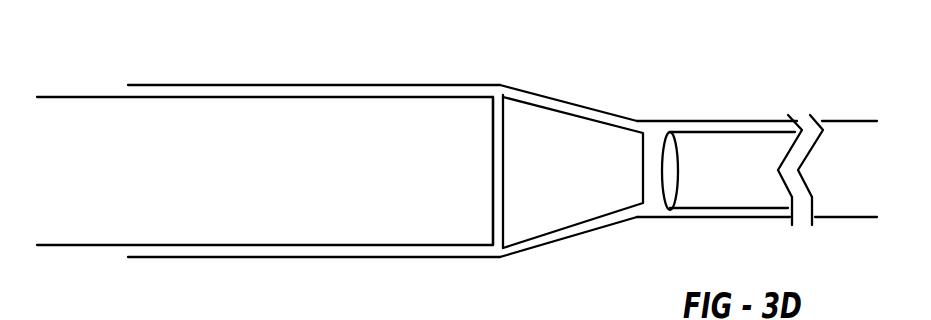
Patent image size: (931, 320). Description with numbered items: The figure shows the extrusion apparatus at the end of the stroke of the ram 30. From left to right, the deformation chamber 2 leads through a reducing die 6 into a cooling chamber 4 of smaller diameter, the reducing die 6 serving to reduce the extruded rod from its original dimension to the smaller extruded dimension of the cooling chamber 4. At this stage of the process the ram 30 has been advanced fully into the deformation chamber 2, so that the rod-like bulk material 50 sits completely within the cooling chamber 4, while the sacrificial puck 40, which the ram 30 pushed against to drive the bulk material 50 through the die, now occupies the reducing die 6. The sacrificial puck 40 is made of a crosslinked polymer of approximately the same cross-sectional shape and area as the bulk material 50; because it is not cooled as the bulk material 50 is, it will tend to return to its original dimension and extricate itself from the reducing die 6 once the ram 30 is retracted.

The ram 30 is at (180, 97).
The deformation chamber 2 is at (500, 270).
The reducing die 6 is at (568, 161).
The sacrificial puck 40 is at (565, 110).
The cooling chamber 4 is at (882, 226).
The bulk material 50 is at (700, 138).